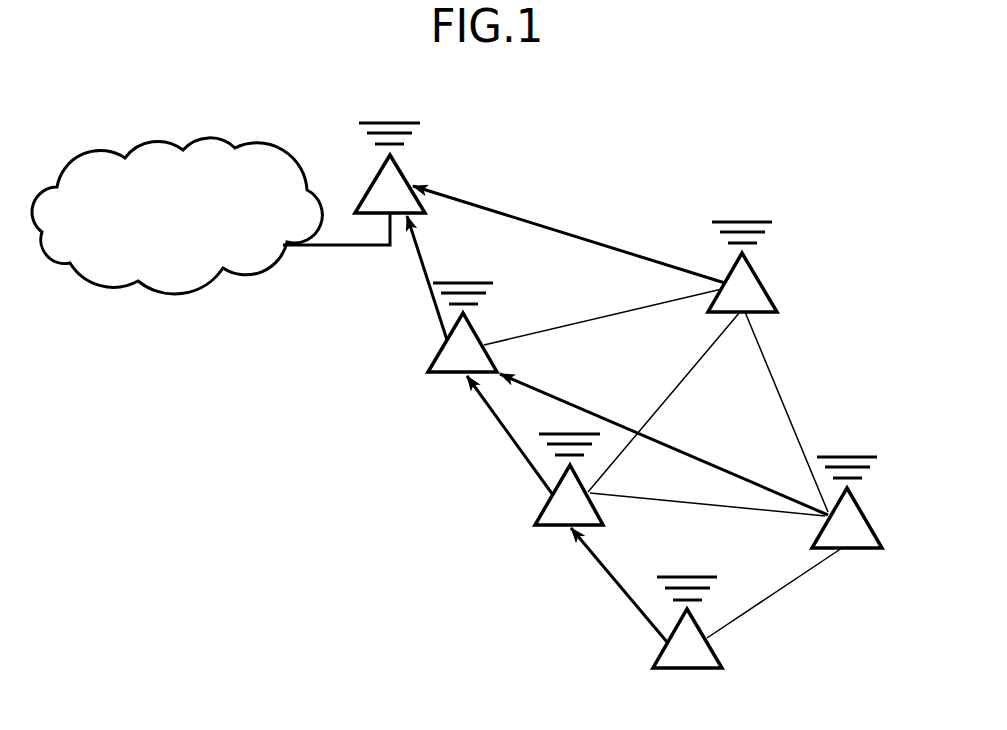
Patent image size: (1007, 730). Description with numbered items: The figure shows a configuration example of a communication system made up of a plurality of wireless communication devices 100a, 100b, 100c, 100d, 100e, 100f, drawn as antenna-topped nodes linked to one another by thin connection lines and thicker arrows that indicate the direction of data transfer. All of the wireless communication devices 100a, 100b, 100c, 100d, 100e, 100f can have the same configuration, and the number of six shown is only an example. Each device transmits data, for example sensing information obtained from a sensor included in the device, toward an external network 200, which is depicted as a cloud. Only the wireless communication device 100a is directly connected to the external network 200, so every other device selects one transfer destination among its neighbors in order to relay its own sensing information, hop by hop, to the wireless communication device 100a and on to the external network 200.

The external network 200 is at (203, 140).
The wireless communication device 100a is at (405, 170).
The wireless communication device 100b is at (435, 360).
The wireless communication device 100c is at (541, 512).
The wireless communication device 100d is at (765, 291).
The wireless communication device 100e is at (868, 526).
The wireless communication device 100f is at (718, 658).